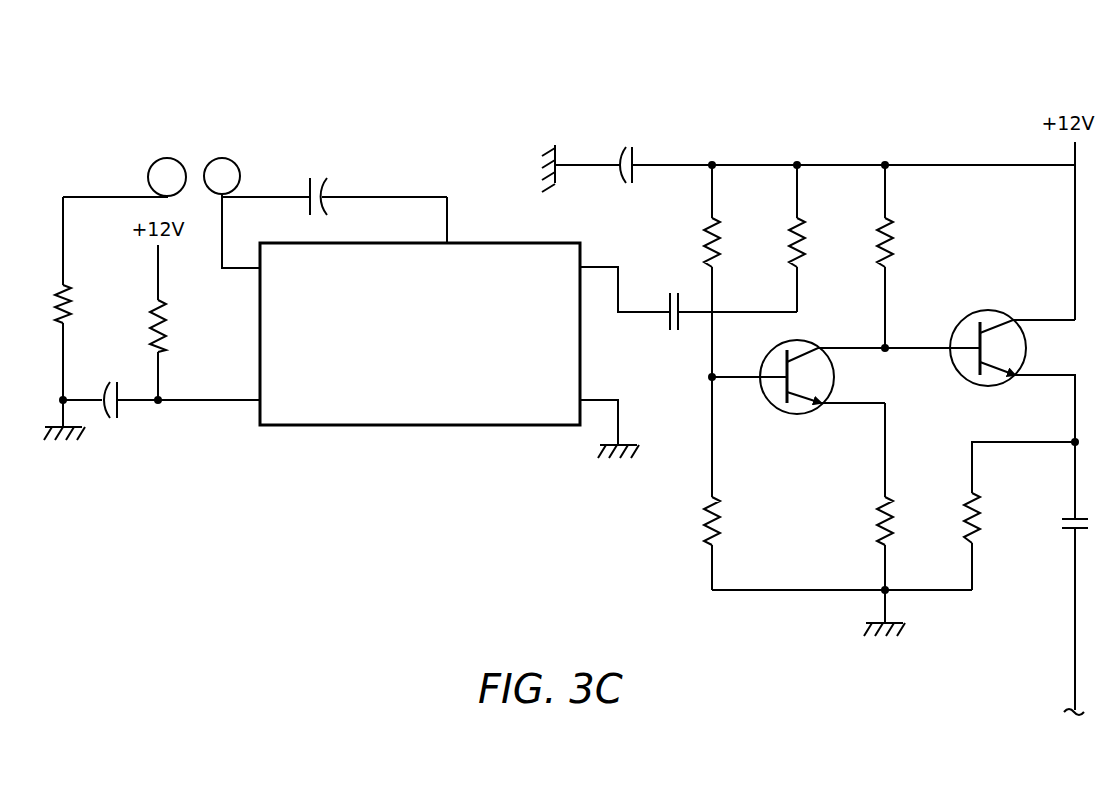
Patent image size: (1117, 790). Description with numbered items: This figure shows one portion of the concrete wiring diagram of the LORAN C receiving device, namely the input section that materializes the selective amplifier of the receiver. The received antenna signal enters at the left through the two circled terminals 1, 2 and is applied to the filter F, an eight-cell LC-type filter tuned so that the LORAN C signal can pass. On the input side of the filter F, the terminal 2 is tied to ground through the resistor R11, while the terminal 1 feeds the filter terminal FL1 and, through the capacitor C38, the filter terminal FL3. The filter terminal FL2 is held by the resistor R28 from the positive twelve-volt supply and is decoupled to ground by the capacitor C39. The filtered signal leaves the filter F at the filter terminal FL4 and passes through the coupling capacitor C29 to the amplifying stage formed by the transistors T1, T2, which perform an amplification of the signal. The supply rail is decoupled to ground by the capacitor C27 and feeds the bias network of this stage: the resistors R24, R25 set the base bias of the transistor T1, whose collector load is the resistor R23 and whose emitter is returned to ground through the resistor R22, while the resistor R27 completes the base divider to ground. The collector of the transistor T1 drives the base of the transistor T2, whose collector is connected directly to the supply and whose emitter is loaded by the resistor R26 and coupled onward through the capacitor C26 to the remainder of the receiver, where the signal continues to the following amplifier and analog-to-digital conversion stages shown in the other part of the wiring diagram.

The terminal 1 is at (222, 176).
The terminal 2 is at (167, 177).
The resistor R11 is at (83, 312).
The resistor R28 is at (179, 322).
The capacitor C39 is at (110, 386).
The capacitor C38 is at (334, 185).
The filter terminal FL1 is at (242, 231).
The filter terminal FL2 is at (209, 388).
The filter terminal FL3 is at (468, 220).
The filter terminal FL4 is at (625, 278).
The filter F is at (420, 334).
The capacitor C27 is at (808, 158).
The capacitor C29 is at (725, 301).
The resistor R24 is at (732, 331).
The resistor R25 is at (817, 238).
The resistor R23 is at (905, 256).
The resistor R27 is at (732, 543).
The resistor R22 is at (905, 496).
The resistor R26 is at (1019, 516).
The transistor T1 is at (846, 390).
The transistor T2 is at (1012, 414).
The capacitor C26 is at (1089, 606).